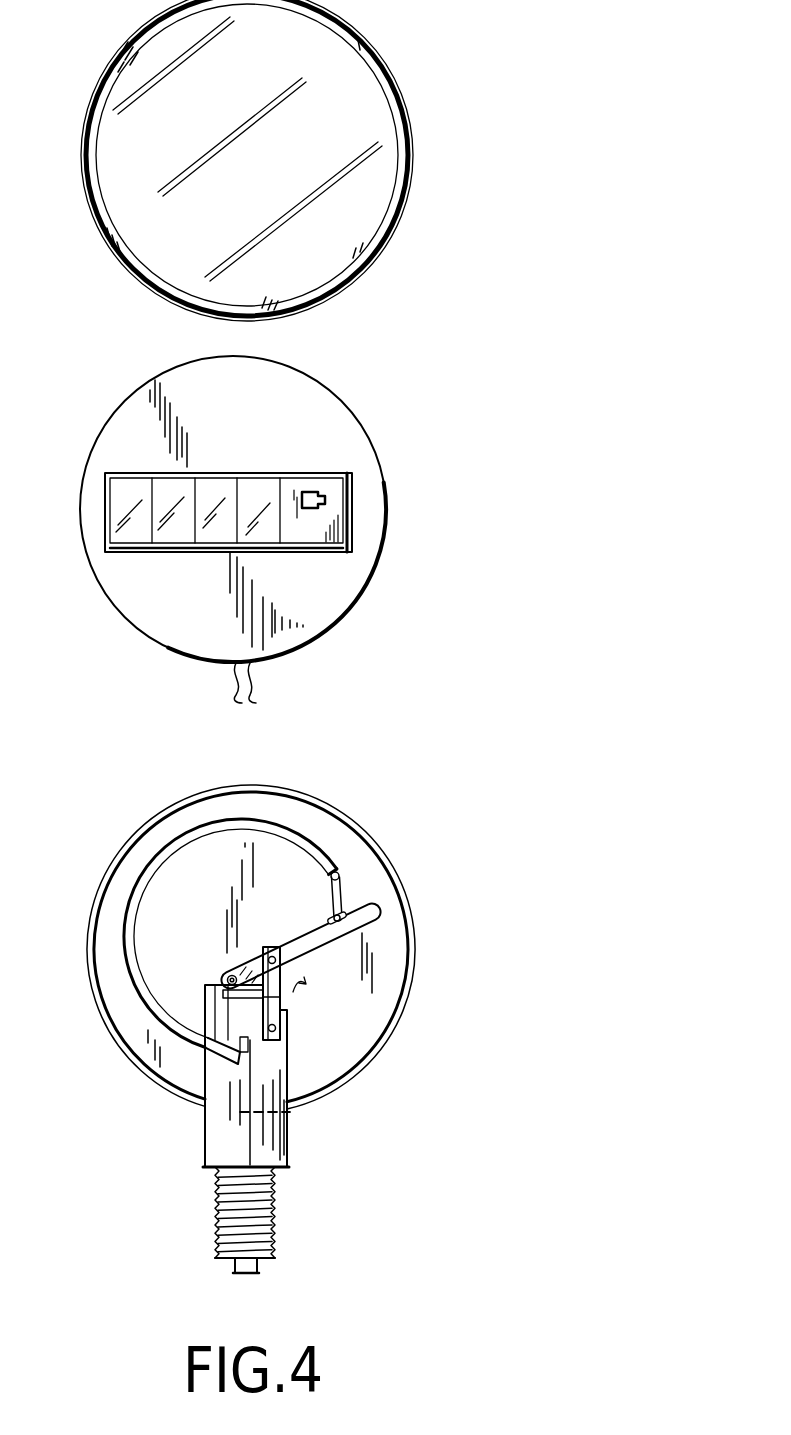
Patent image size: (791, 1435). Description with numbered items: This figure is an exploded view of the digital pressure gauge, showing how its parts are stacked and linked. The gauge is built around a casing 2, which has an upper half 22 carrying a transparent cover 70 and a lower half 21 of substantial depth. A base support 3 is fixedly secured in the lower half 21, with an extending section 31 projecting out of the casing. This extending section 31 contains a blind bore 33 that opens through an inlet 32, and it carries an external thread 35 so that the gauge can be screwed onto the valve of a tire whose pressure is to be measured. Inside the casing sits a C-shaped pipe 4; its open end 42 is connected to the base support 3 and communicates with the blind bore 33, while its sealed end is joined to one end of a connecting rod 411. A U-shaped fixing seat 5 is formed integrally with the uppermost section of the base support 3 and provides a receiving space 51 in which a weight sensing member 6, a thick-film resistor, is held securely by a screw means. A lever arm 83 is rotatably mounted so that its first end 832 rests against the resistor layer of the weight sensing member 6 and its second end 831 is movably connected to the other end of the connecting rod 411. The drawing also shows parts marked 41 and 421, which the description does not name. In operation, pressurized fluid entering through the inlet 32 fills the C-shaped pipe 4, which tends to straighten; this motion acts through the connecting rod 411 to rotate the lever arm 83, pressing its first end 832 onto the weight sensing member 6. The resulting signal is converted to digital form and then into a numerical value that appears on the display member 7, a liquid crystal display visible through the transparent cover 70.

The casing 2 is at (264, 1020).
The lower half 21 is at (367, 830).
The upper half 22 is at (403, 183).
The base support 3 is at (305, 1133).
The extending section 31 is at (273, 1150).
The inlet 32 is at (258, 1268).
The blind bore 33 is at (288, 1112).
The external thread 35 is at (277, 1205).
The C-shaped pipe 4 is at (202, 973).
The pin 41 is at (342, 872).
The connecting rod 411 is at (347, 895).
The open end 42 is at (197, 1085).
The support bracket 421 is at (255, 1058).
The U-shaped fixing seat 5 is at (223, 990).
The receiving space 51 is at (233, 980).
The weight sensing member 6 is at (220, 1008).
The display member 7 is at (240, 472).
The transparent cover 70 is at (249, 529).
The lever arm 83 is at (297, 939).
The second end 831 is at (350, 923).
The first end 832 is at (227, 980).